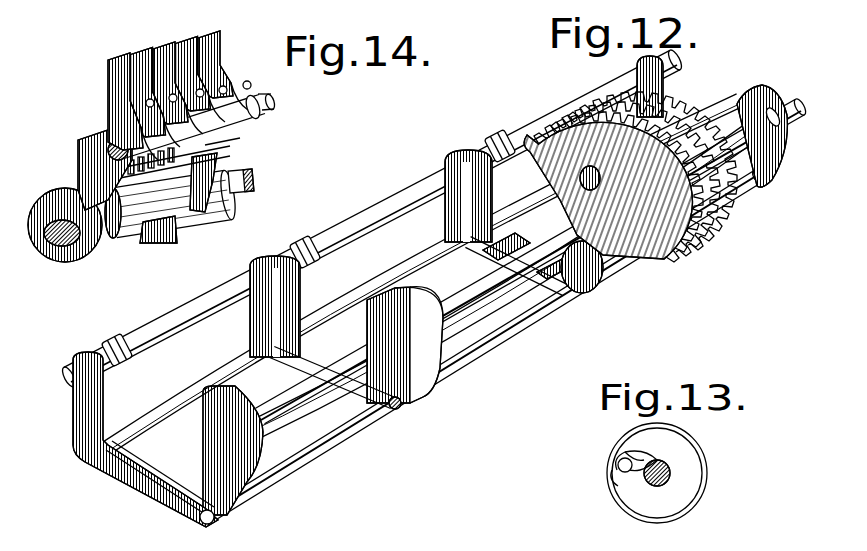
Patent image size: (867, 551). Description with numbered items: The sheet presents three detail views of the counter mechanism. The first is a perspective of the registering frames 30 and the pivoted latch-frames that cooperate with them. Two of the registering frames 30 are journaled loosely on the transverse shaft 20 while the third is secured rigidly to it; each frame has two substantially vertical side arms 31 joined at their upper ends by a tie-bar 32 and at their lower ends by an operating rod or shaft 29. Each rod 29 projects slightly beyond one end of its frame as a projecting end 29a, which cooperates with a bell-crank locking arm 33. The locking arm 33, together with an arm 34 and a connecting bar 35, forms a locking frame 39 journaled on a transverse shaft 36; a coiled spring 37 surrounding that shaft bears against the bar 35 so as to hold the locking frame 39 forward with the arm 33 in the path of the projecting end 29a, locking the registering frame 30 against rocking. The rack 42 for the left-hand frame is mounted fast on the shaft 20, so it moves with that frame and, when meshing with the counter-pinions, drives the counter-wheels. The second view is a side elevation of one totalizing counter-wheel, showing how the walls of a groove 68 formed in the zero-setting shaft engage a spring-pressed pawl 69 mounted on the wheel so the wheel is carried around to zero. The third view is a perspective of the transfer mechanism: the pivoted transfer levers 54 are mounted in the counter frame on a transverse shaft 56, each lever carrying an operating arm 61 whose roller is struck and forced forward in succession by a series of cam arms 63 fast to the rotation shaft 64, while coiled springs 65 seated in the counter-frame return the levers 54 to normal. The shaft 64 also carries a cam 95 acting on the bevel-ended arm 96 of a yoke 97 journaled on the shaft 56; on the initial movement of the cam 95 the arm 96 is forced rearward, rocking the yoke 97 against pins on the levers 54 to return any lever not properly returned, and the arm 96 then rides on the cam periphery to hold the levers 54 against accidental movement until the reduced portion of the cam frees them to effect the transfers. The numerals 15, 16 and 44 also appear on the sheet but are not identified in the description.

In FIG. 13, the shaft 15 is at (672, 474).
In FIG. 13, the ring 16 is at (698, 440).
In FIG. 12, the transverse shaft 20 is at (815, 86).
In FIG. 12, the operating rod 29 is at (345, 428).
In FIG. 12, the projecting end 29a is at (215, 517).
In FIG. 12, the registering frame 30 is at (203, 415).
In FIG. 12, the side arm 31 is at (789, 147).
In FIG. 12, the tie-bar 32 is at (247, 357).
In FIG. 12, the locking arm 33 is at (157, 479).
In FIG. 12, the arm 34 is at (257, 313).
In FIG. 12, the connecting bar 35 is at (107, 408).
In FIG. 12, the transverse shaft 36 is at (192, 307).
In FIG. 12, the coiled spring 37 is at (106, 345).
In FIG. 12, the locking frame 39 is at (74, 358).
In FIG. 12, the rack 42 is at (608, 190).
In FIG. 12, the gear teeth 44 is at (705, 222).
In FIG. 14, the transfer lever 54 is at (132, 56).
In FIG. 14, the transverse shaft 56 is at (277, 102).
In FIG. 14, the operating arm 61 is at (106, 148).
In FIG. 14, the cam arm 63 is at (192, 157).
In FIG. 14, the rotation shaft 64 is at (255, 182).
In FIG. 14, the coiled spring 65 is at (146, 104).
In FIG. 13, the groove 68 is at (643, 472).
In FIG. 13, the spring pressed pawl 69 is at (620, 456).
In FIG. 14, the cam 95 is at (60, 261).
In FIG. 14, the bevel-ended arm 96 is at (103, 172).
In FIG. 14, the yoke 97 is at (226, 146).